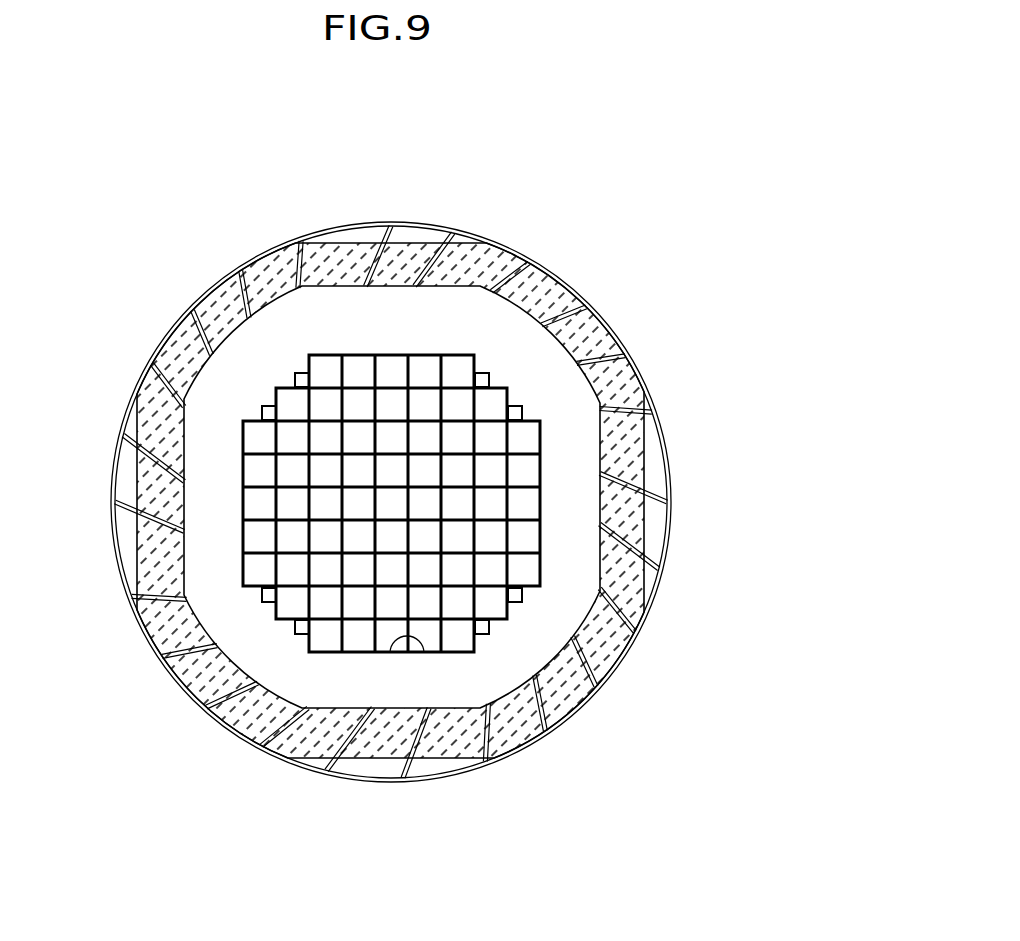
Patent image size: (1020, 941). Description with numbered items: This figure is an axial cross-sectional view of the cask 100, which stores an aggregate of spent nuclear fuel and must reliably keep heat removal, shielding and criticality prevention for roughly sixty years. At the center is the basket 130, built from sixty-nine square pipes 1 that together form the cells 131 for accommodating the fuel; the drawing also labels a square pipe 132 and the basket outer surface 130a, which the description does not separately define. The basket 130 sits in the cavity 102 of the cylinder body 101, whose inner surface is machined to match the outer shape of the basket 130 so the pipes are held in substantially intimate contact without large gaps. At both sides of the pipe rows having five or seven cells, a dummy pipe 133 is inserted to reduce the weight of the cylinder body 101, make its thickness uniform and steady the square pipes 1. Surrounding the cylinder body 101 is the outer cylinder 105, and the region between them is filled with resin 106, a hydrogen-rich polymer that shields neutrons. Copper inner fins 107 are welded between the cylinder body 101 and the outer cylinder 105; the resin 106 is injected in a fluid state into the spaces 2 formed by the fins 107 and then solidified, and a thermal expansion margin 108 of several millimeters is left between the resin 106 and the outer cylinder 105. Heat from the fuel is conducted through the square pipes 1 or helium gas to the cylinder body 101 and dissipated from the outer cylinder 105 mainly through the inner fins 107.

The cask 100 is at (194, 194).
The cylinder body 101 is at (528, 638).
The cavity 102 is at (428, 658).
The outer cylinder 105 is at (620, 658).
The resin 106 is at (603, 376).
The inner fin 107 is at (292, 752).
The thermal expansion margin 108 is at (592, 310).
The basket 130 is at (318, 347).
The basket outer surface 130a is at (543, 447).
The cell 131 is at (358, 365).
The square pipe 132 is at (423, 353).
The dummy pipe 133 is at (147, 687).
The square pipe 1 is at (345, 285).
The space region 2 is at (437, 237).